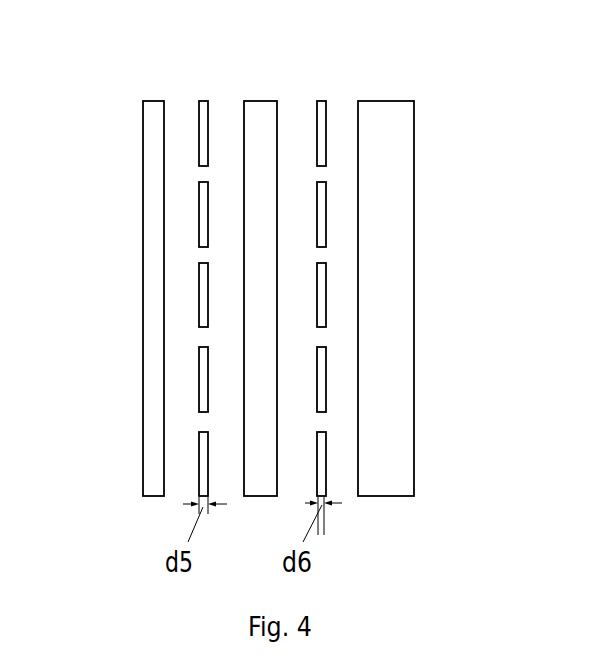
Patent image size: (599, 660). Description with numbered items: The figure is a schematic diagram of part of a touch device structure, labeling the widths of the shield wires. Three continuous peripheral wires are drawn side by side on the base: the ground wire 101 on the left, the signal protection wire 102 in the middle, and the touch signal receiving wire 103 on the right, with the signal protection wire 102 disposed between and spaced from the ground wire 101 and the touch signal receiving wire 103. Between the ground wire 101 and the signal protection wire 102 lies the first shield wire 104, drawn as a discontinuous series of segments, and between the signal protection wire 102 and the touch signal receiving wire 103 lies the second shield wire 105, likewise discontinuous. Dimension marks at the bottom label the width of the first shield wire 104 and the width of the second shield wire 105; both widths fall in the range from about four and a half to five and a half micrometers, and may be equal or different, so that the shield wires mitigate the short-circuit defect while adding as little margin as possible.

The ground wire 101 is at (153, 165).
The signal protection wire 102 is at (261, 125).
The touch signal receiving wire 103 is at (382, 117).
The first shield wire 104 is at (202, 130).
The second shield wire 105 is at (322, 142).